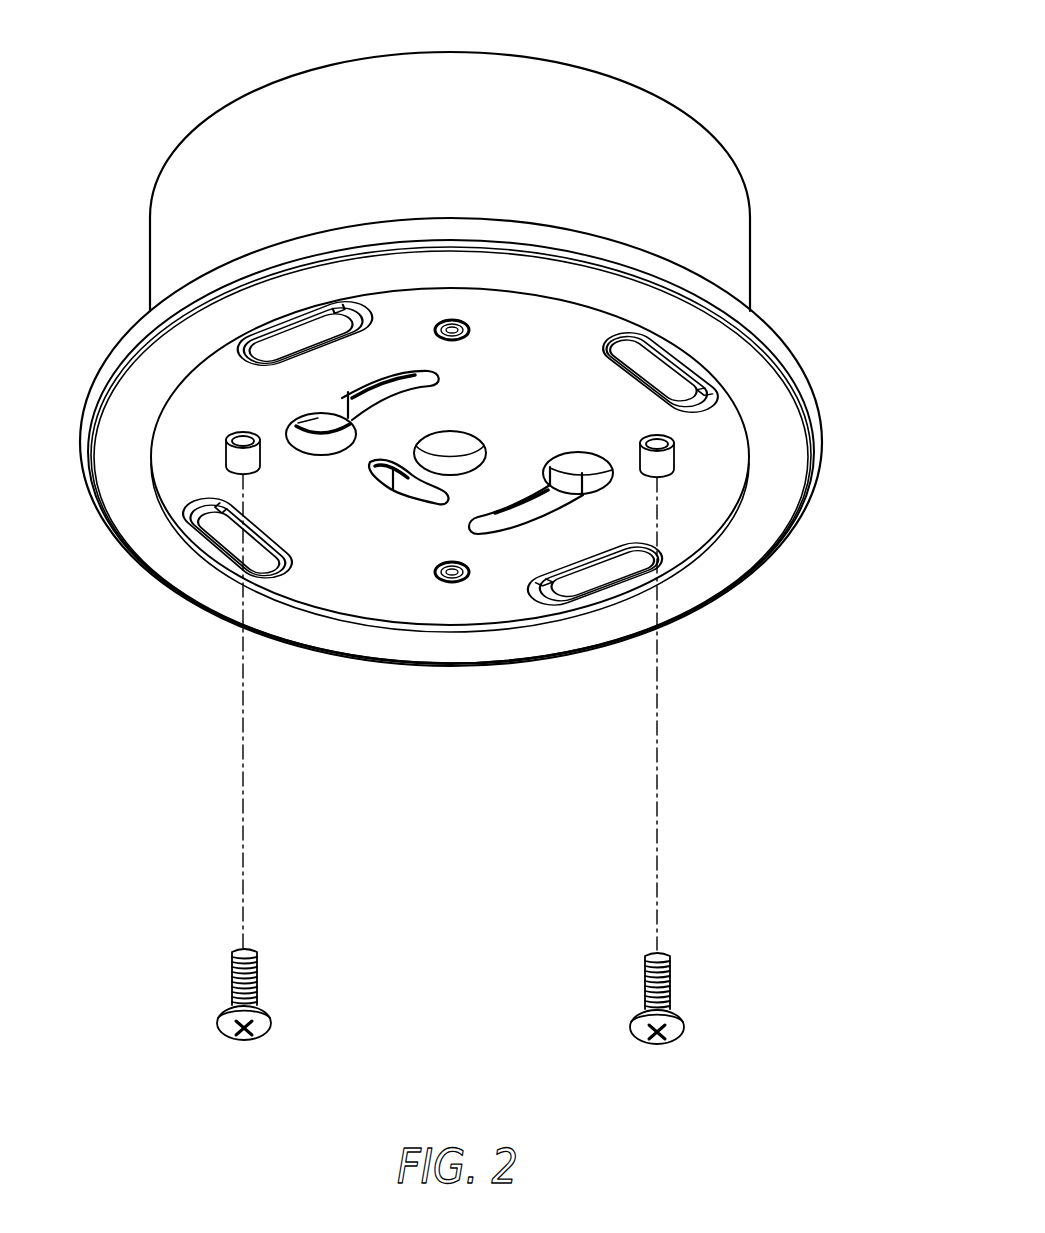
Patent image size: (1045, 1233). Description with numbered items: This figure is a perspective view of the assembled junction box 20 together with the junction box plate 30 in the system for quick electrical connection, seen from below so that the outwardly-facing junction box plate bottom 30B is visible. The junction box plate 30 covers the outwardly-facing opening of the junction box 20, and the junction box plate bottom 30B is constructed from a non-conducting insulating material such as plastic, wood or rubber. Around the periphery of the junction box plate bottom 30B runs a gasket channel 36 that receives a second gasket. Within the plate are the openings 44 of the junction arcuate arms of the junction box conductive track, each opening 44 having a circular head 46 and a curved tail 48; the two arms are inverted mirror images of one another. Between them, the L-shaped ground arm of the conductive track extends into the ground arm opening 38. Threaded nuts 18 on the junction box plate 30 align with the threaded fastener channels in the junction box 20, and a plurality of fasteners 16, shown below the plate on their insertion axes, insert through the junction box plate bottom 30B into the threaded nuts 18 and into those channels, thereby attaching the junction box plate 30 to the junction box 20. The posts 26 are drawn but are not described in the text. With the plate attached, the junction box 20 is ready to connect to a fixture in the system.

The fasteners 16 is at (258, 982).
The threaded nuts 18 is at (452, 318).
The junction box 20 is at (720, 101).
The posts 26 is at (657, 455).
The junction box plate 30 is at (832, 503).
The junction box plate bottom 30B is at (820, 442).
The gasket channel 36 is at (706, 582).
The ground arm opening 38 is at (433, 496).
The opening 44 is at (577, 462).
The circular head 46 is at (300, 422).
The curved tail 48 is at (355, 388).